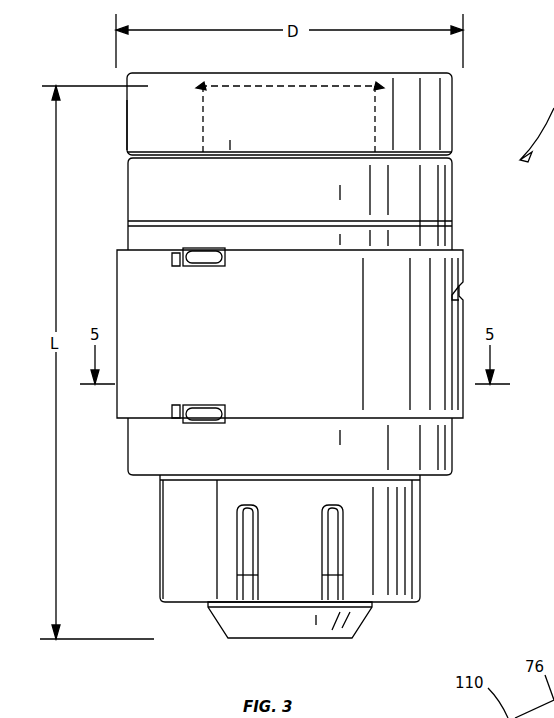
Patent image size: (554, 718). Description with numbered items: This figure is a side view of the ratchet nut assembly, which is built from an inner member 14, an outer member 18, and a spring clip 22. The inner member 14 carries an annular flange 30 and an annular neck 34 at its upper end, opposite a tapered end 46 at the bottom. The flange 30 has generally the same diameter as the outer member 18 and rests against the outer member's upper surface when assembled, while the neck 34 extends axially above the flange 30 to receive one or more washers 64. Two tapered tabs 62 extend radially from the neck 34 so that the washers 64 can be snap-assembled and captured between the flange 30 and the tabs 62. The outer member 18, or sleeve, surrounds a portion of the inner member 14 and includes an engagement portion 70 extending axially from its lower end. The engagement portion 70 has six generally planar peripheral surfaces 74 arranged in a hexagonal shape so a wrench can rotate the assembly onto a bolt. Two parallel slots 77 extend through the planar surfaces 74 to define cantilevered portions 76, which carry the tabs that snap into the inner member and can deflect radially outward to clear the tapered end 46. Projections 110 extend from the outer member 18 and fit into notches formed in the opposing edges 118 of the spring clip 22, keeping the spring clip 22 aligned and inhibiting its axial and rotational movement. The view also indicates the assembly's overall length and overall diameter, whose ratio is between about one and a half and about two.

The inner member 14 is at (430, 152).
The outer member 18 is at (450, 458).
The spring clip 22 is at (128, 290).
The annular flange 30 is at (440, 178).
The annular neck 34 is at (248, 78).
The tapered end 46 is at (235, 628).
The tabs 62 is at (198, 85).
The washers 64 is at (148, 128).
The engagement portion 70 is at (185, 525).
The planar peripheral surfaces 74 is at (172, 570).
The cantilevered portions 76 is at (290, 583).
The slots 77 is at (253, 583).
The projections 110 is at (205, 255).
The opposing edges 118 is at (430, 250).